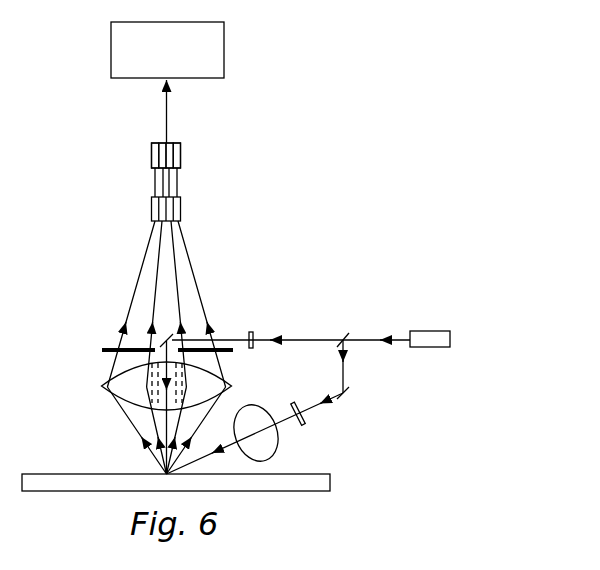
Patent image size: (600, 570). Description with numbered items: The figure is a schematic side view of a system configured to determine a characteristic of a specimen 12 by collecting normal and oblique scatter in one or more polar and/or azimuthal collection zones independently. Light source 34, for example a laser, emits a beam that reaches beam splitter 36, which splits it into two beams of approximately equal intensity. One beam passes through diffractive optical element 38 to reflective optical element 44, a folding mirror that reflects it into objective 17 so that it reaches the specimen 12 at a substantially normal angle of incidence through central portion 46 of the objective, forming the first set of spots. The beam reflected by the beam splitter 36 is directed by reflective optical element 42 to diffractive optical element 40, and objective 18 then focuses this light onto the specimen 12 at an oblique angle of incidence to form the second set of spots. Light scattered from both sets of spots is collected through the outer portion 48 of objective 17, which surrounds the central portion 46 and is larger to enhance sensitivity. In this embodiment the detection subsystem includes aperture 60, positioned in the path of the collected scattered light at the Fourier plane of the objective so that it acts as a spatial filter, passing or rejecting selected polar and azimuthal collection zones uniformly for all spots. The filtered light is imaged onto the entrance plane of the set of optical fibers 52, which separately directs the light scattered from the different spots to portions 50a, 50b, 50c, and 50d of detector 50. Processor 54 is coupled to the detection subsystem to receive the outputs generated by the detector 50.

The specimen 12 is at (335, 479).
The objective 17 is at (103, 385).
The objective 18 is at (237, 407).
The light source 34 is at (452, 337).
The beam splitter 36 is at (349, 333).
The diffractive optical element 38 is at (253, 333).
The diffractive optical element 40 is at (306, 422).
The reflective optical element 42 is at (350, 396).
The reflective optical element 44 is at (161, 346).
The central portion 46 is at (152, 410).
The portion 48 is at (132, 386).
The detector 50 is at (148, 158).
The portion of detector 50a is at (156, 143).
The portion of detector 50b is at (158, 142).
The portion of detector 50c is at (170, 142).
The portion of detector 50d is at (178, 143).
The set of optical fibers 52 is at (148, 208).
The processor 54 is at (228, 50).
The aperture 60 is at (102, 349).